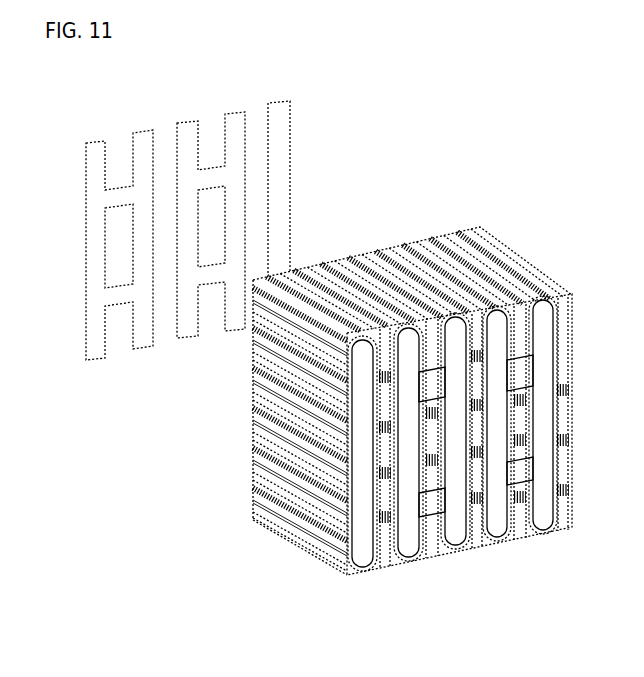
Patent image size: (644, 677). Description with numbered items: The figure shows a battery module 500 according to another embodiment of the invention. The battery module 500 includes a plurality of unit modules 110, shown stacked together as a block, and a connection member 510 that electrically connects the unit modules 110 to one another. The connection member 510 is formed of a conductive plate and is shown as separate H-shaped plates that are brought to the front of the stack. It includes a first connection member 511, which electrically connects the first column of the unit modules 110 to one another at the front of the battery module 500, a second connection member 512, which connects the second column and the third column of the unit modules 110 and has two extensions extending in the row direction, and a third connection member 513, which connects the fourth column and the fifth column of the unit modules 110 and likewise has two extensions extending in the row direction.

The battery module 500 is at (53, 166).
The connection member 510 is at (300, 169).
The unit modules 110 is at (548, 265).
The first connection member 511 is at (360, 541).
The second connection member 512 is at (455, 531).
The third connection member 513 is at (544, 508).